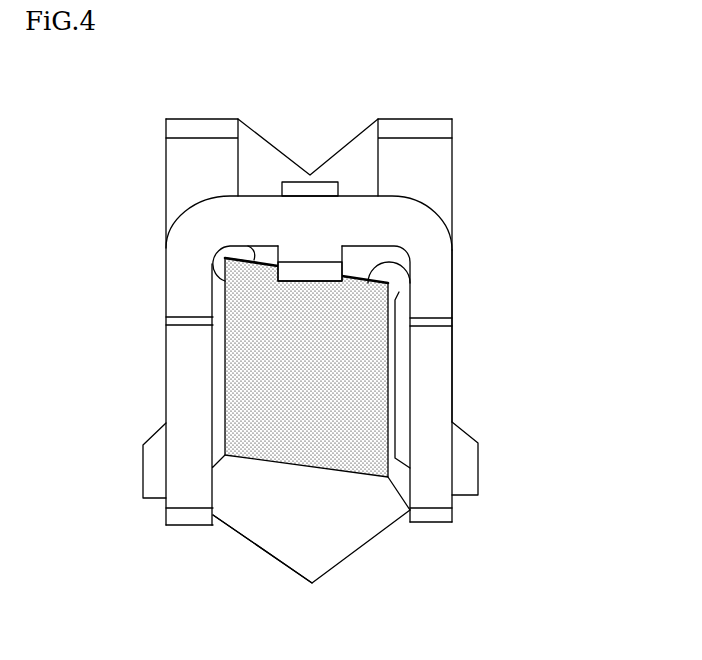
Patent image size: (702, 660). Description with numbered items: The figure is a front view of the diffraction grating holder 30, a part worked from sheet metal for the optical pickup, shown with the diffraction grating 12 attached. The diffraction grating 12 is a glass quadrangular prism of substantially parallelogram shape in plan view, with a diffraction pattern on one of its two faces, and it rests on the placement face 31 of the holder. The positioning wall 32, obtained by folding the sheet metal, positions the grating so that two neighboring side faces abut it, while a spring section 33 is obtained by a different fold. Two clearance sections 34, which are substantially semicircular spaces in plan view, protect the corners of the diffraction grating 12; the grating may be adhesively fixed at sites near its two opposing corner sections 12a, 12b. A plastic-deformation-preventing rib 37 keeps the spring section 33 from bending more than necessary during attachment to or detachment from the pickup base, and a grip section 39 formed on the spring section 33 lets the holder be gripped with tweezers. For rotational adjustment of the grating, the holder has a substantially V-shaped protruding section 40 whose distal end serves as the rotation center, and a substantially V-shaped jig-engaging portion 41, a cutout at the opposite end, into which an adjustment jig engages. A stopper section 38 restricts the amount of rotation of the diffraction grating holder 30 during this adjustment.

The diffraction grating 12 is at (258, 380).
The corner section 12a is at (222, 256).
The corner section 12b is at (410, 512).
The diffraction grating holder 30 is at (463, 103).
The placement face 31 is at (275, 497).
The positioning wall 32 is at (240, 315).
The spring section 33 is at (442, 262).
The clearance section 34 is at (220, 267).
The plastic-deformation-preventing rib 37 is at (302, 188).
The stopper section 38 is at (158, 458).
The grip section 39 is at (310, 268).
The protruding section 40 is at (356, 584).
The jig-engaging portion 41 is at (335, 113).